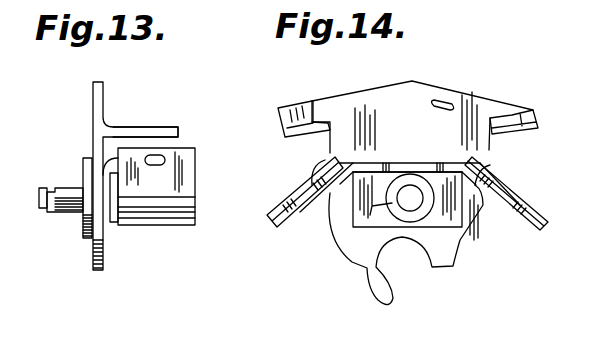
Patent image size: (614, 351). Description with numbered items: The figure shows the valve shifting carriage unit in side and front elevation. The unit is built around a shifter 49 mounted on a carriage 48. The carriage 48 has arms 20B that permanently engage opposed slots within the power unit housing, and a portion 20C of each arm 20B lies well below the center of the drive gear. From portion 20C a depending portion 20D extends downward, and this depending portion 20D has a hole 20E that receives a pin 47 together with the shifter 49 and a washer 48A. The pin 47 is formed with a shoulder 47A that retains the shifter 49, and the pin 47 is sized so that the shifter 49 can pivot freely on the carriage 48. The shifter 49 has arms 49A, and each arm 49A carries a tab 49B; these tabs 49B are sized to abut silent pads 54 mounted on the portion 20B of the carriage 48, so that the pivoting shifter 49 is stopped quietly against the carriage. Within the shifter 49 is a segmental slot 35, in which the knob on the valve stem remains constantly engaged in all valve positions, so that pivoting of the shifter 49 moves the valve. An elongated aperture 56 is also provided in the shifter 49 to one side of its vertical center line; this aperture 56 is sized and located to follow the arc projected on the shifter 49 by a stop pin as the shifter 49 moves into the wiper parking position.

In FIG. 13, the shifter 49 is at (93, 99).
In FIG. 14, the shifter 49 is at (411, 81).
In FIG. 14, the arm 49A is at (283, 108).
In FIG. 13, the tab 49B is at (143, 127).
In FIG. 14, the tab 49B is at (340, 78).
In FIG. 13, the carriage 48 is at (195, 158).
In FIG. 14, the carriage 48 is at (387, 163).
In FIG. 13, the washer 48A is at (115, 223).
In FIG. 14, the washer 48A is at (405, 210).
In FIG. 13, the silent pad 54 is at (165, 181).
In FIG. 14, the silent pad 54 is at (303, 178).
In FIG. 14, the elongated aperture 56 is at (470, 70).
In FIG. 13, the pin 47 is at (68, 194).
In FIG. 13, the shoulder 47A is at (86, 238).
In FIG. 14, the arm 20B is at (306, 207).
In FIG. 14, the portion 20C is at (440, 138).
In FIG. 14, the depending portion 20D is at (455, 268).
In FIG. 14, the hole 20E is at (393, 300).
In FIG. 14, the segmental slot 35 is at (430, 265).